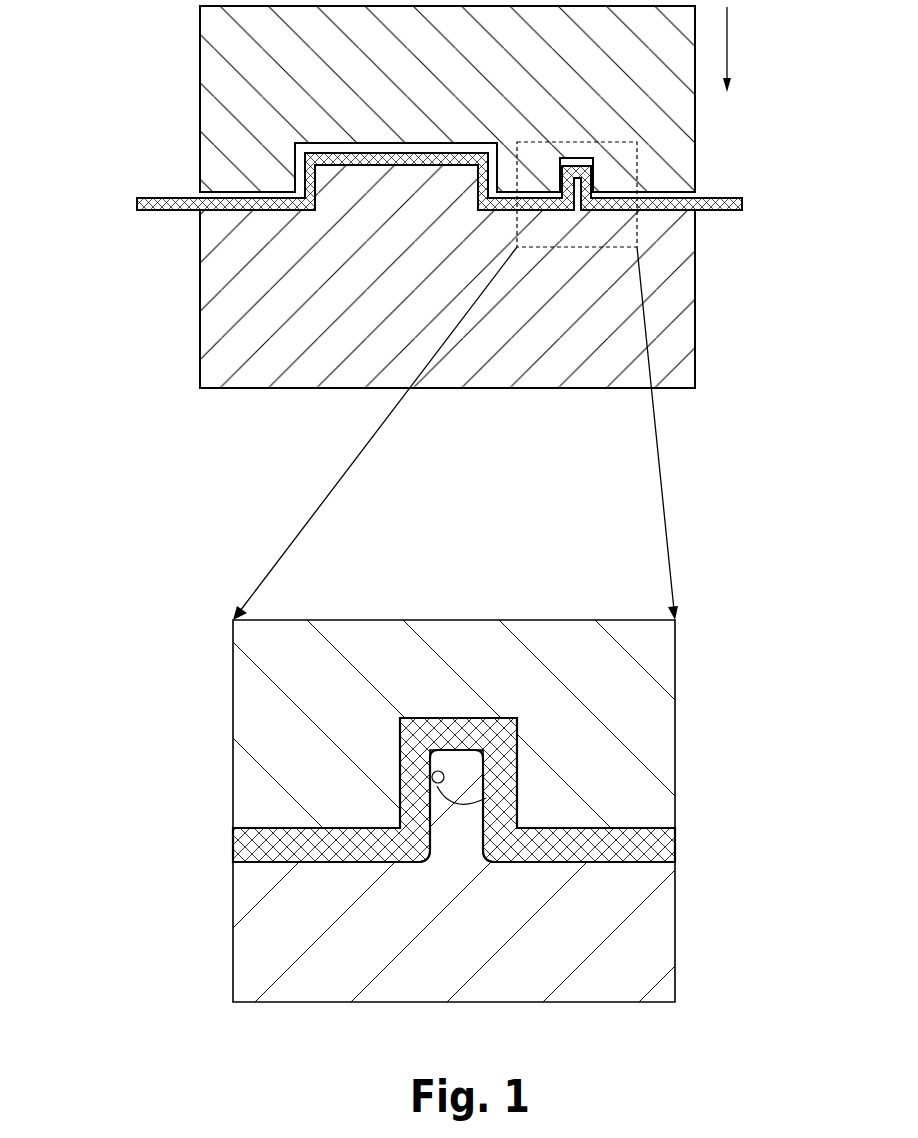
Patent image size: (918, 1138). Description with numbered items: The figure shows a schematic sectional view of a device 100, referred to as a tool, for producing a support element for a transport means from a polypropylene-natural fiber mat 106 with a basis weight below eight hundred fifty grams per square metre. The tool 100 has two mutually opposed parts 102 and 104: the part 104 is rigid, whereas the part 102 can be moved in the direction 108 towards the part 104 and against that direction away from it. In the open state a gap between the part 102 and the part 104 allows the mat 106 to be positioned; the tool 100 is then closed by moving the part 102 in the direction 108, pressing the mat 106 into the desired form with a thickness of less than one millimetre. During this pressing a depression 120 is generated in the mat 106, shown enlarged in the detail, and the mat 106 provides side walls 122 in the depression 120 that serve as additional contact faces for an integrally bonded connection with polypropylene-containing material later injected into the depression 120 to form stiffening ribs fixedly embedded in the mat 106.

The device 100 is at (150, 163).
The part 102 is at (222, 31).
The part 104 is at (222, 368).
The polypropylene-natural fiber mat 106 is at (742, 205).
The direction 108 is at (728, 30).
The depression 120 is at (592, 184).
The side walls 122 is at (432, 778).